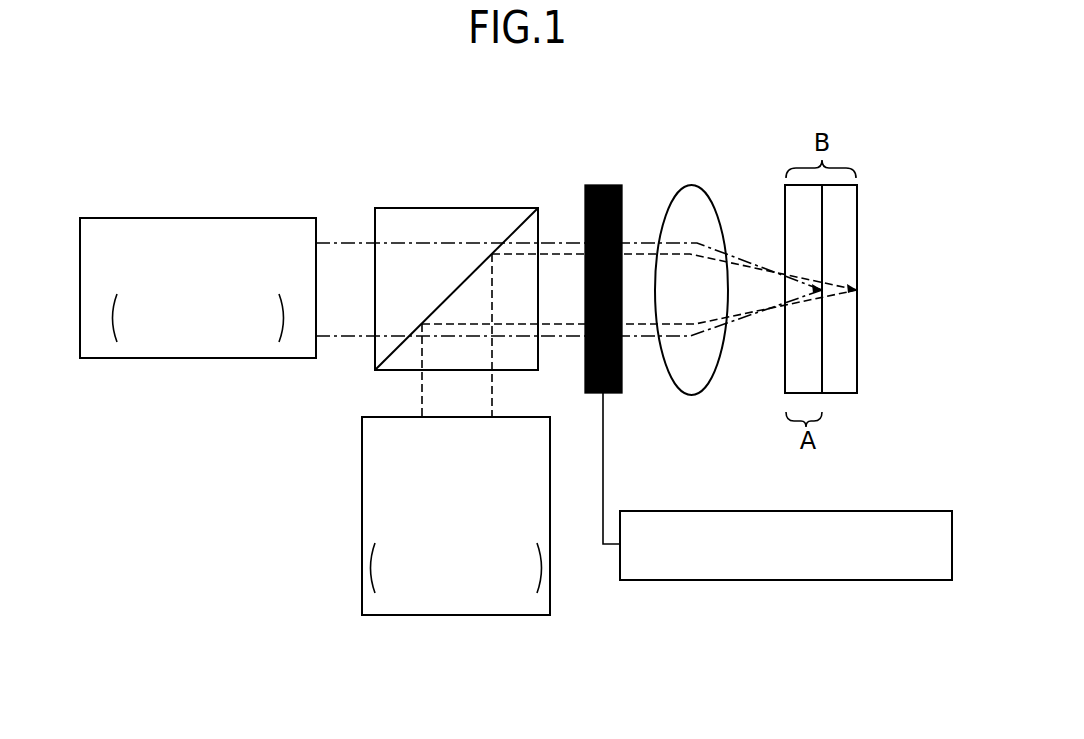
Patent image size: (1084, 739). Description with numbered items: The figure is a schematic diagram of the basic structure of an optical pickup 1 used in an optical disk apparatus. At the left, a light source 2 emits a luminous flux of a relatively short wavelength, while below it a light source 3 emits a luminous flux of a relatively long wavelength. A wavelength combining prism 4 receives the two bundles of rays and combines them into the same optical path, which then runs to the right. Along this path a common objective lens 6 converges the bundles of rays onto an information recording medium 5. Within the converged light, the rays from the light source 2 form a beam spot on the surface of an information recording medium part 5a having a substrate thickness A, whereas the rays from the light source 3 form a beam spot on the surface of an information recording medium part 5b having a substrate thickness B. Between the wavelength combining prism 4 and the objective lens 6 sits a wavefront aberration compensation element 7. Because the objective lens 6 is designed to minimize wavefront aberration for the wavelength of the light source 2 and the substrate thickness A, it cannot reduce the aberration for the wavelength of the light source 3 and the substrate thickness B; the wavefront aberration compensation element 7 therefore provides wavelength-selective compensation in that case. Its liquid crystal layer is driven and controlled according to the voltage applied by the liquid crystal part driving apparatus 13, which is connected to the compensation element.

The optical pickup 1 is at (238, 445).
The light source 2 is at (196, 217).
The light source 3 is at (362, 520).
The wavelength combining prism 4 is at (453, 207).
The information recording medium 5 is at (827, 315).
The information recording medium part 5a is at (793, 376).
The information recording medium part 5b is at (850, 207).
The objective lens 6 is at (690, 185).
The wavefront aberration compensation element 7 is at (600, 185).
The liquid crystal part driving apparatus 13 is at (912, 510).